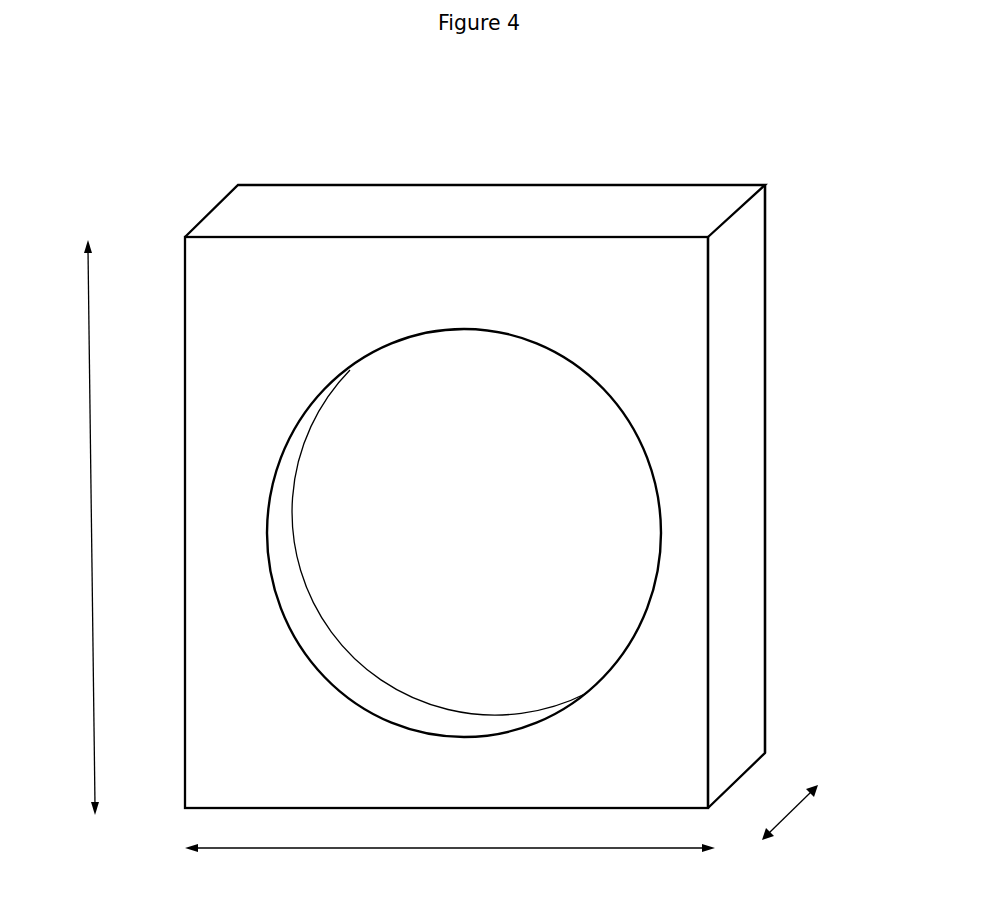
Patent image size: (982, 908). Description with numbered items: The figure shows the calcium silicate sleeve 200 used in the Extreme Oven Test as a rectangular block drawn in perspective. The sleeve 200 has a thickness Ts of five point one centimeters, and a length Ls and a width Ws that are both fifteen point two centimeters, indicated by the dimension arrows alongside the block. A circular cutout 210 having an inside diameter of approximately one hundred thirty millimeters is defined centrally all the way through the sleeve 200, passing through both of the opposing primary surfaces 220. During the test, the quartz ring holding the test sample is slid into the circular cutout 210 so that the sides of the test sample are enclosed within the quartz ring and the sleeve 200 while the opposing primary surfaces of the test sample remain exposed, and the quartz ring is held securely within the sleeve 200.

The calcium silicate sleeve 200 is at (152, 238).
The circular cutout 210 is at (533, 572).
The opposing primary surfaces 220 is at (677, 343).